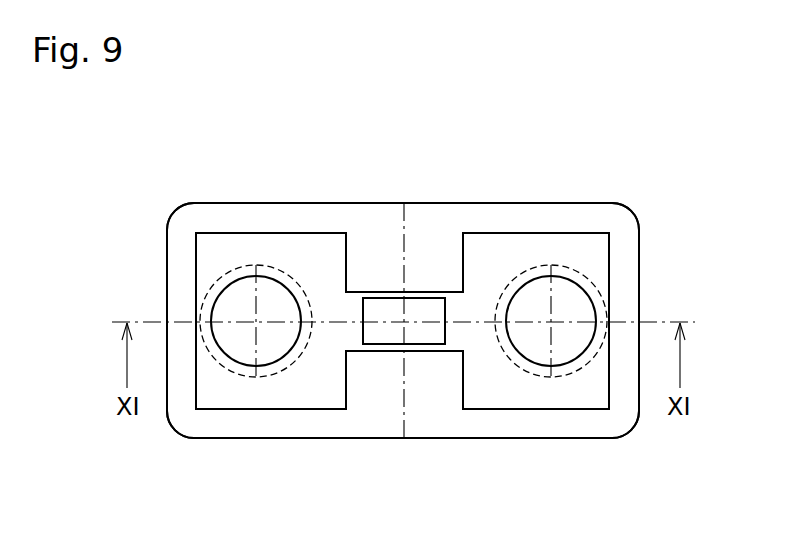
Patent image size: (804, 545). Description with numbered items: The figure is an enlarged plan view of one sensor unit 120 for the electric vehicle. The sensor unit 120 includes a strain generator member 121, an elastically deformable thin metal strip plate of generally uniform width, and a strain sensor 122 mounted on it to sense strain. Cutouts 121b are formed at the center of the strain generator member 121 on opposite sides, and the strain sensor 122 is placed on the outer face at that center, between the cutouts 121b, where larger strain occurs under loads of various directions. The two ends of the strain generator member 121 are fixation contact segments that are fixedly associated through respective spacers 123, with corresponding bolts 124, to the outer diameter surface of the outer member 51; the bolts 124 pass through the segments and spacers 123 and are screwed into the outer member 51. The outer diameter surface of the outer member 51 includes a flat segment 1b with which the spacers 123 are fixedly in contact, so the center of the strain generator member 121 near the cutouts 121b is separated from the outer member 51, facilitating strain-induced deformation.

The outer member 51 is at (718, 162).
The sensor unit 120 is at (335, 222).
The strain generator member 121 is at (494, 258).
The cutouts 121b is at (450, 290).
The strain sensor 122 is at (389, 333).
The spacers 123 is at (232, 270).
The bolts 124 is at (245, 347).
The flat segment 1b is at (376, 242).